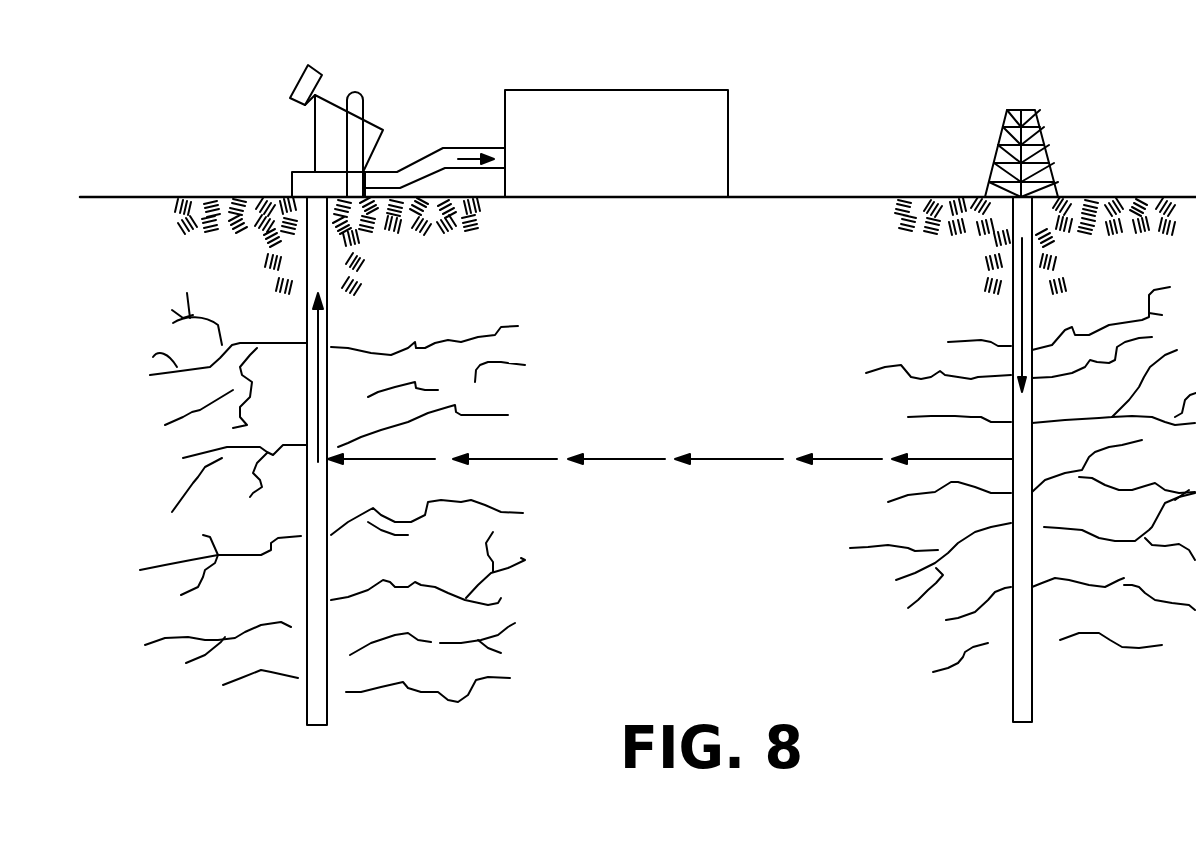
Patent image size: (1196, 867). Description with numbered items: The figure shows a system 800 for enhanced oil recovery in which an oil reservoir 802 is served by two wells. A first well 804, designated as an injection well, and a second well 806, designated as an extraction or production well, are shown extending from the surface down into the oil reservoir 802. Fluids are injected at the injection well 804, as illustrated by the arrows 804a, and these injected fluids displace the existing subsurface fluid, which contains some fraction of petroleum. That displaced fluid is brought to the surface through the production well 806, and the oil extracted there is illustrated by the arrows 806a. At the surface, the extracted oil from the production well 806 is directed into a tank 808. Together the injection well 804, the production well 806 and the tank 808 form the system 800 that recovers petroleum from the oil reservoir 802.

The system 800 is at (835, 60).
The oil reservoir 802 is at (765, 566).
The injection well 804 is at (1042, 138).
The arrows 804a is at (1015, 318).
The production well 806 is at (313, 158).
The arrows 806a is at (331, 328).
The tank 808 is at (653, 149).